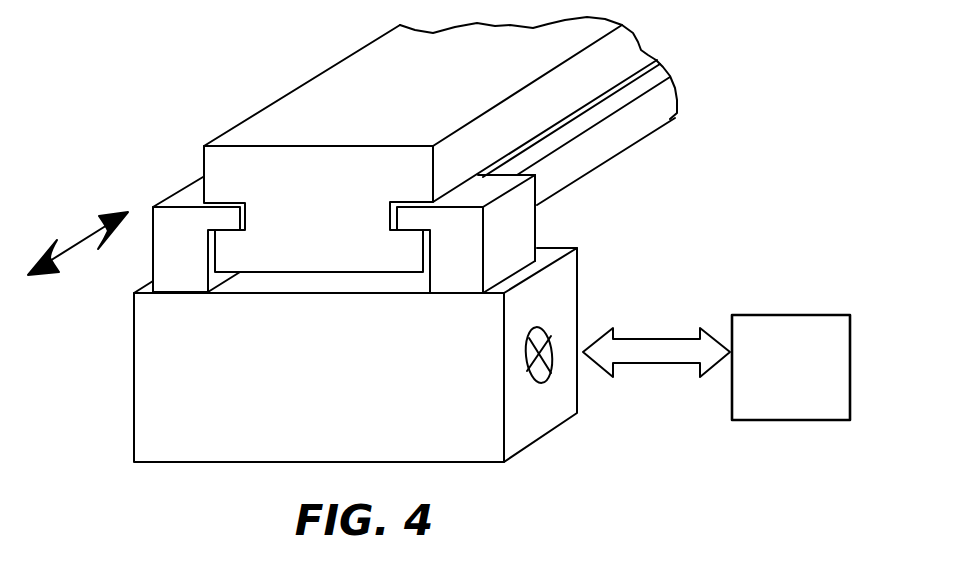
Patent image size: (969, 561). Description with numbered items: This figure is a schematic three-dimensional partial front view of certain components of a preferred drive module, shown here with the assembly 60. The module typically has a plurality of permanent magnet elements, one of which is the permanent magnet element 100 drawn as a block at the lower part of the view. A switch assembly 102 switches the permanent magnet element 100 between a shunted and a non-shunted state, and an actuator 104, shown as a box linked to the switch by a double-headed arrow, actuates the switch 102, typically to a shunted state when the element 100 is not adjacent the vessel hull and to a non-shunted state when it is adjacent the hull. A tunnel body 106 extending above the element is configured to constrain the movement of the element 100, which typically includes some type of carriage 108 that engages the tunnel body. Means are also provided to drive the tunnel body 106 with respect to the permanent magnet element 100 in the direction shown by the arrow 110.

The rail 60 is at (423, 144).
The permanent magnet element 100 is at (163, 388).
The switch assembly 102 is at (552, 350).
The actuator 104 is at (772, 406).
The tunnel body 106 is at (260, 127).
The carriage 108 is at (183, 197).
The arrow 110 is at (75, 245).